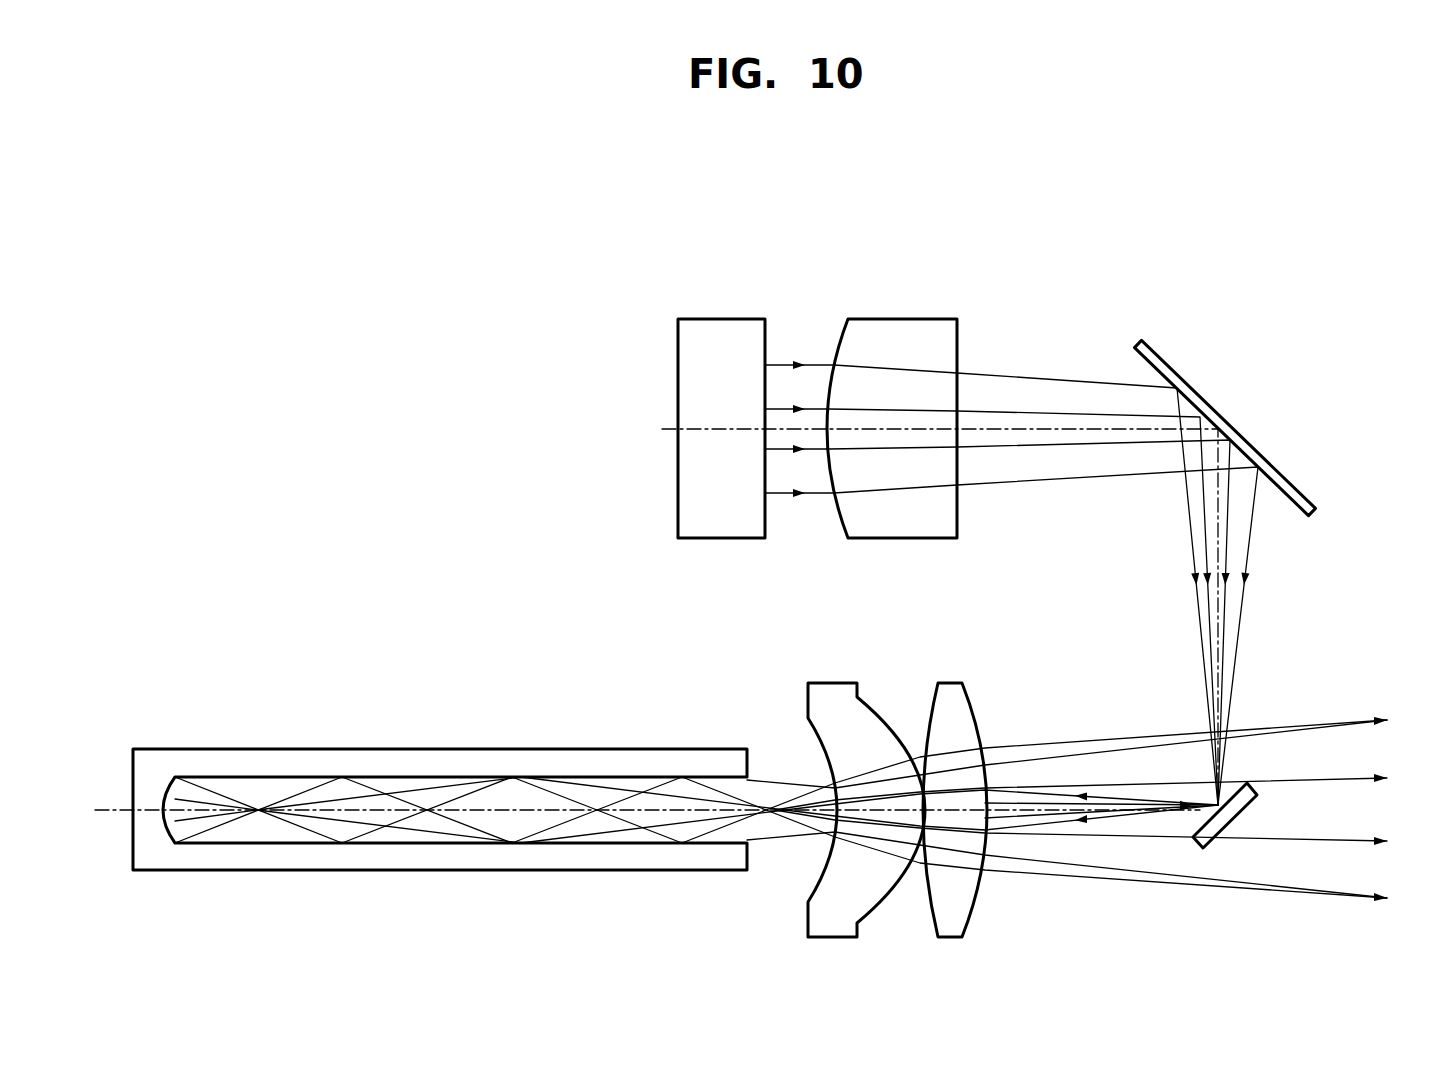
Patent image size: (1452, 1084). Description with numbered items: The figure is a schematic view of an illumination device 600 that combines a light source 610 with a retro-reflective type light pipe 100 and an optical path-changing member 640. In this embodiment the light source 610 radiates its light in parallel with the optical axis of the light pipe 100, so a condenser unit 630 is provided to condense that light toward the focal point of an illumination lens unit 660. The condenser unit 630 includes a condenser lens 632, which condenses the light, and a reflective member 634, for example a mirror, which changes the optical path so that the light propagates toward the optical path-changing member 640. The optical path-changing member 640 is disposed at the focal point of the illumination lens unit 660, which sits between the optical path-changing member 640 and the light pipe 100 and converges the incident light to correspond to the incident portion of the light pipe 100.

The retro-reflective type light pipe 100 is at (158, 733).
The illumination device 600 is at (1061, 551).
The light source 610 is at (724, 337).
The condenser unit 630 is at (1071, 379).
The condenser lens 632 is at (933, 330).
The reflective member 634 is at (1225, 405).
The optical path-changing member 640 is at (1237, 805).
The illumination lens unit 660 is at (1005, 663).